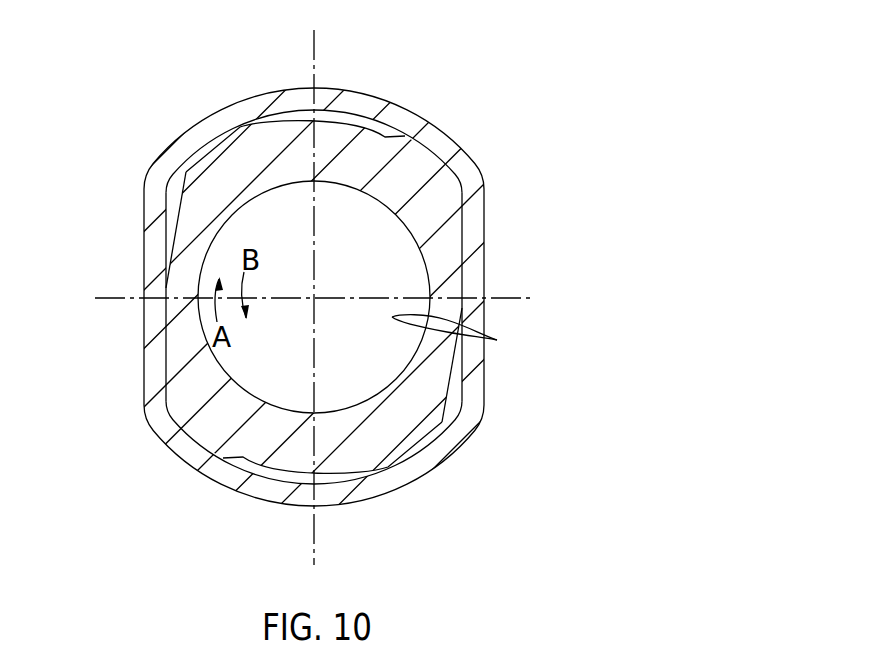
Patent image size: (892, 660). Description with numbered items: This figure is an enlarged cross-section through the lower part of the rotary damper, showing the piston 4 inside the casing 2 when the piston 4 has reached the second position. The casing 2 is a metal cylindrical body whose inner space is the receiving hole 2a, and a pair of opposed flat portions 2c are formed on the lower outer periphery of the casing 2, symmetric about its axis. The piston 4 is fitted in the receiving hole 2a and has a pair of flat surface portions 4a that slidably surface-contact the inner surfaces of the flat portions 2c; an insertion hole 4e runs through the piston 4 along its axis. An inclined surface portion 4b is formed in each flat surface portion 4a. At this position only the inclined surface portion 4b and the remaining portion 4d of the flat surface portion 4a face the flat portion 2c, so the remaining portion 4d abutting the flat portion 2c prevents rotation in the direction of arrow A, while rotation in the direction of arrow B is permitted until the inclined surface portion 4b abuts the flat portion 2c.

The casing 2 is at (404, 108).
The receiving hole 2a is at (225, 163).
The flat portion 2c is at (145, 258).
The piston 4 is at (415, 172).
The flat surface portion 4a is at (166, 356).
The remaining portion 4d is at (462, 232).
The inclined surface portion 4b is at (181, 206).
The insertion hole 4e is at (497, 340).